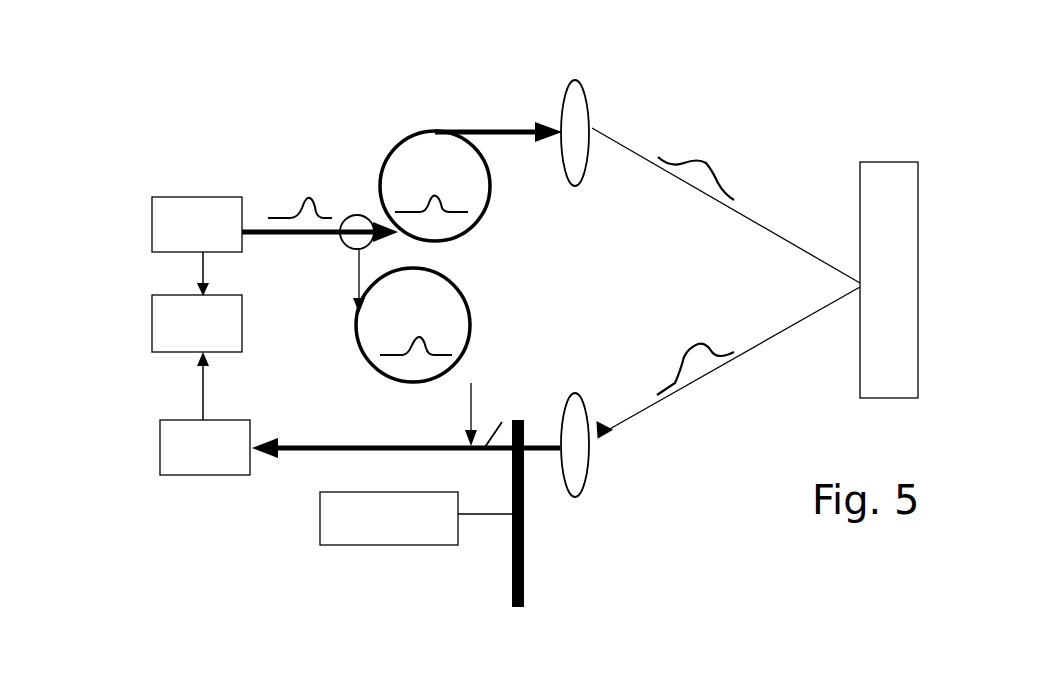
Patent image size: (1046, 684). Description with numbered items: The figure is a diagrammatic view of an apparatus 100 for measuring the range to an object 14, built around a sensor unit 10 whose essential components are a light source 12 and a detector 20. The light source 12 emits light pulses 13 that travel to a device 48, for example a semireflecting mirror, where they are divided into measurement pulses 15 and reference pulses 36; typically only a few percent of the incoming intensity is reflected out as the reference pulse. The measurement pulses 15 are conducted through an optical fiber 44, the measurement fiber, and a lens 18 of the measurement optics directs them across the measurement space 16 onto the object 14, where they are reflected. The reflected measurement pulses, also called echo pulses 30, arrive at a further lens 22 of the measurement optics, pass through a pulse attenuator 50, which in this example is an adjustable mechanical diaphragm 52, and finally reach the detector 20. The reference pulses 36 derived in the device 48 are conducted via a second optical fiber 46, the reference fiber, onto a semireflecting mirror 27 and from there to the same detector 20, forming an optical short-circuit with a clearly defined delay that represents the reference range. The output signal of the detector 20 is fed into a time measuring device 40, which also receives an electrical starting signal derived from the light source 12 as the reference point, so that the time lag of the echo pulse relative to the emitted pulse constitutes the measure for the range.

The sensor unit 10 is at (125, 162).
The apparatus 100 is at (236, 128).
The light source 12 is at (224, 240).
The light pulses 13 is at (304, 206).
The object 14 is at (912, 302).
The measurement pulses 15 is at (430, 200).
The measurement space 16 is at (858, 107).
The lens 18 is at (575, 105).
The detector 20 is at (232, 462).
The lens 22 is at (575, 465).
The semireflecting mirror 27 is at (457, 478).
The echo pulses 30 is at (690, 356).
The reference pulses 36 is at (421, 340).
The time measuring device 40 is at (224, 337).
The optical fiber 44 is at (435, 131).
The optical fiber 46 is at (462, 290).
The device 48 is at (357, 215).
The pulse attenuator 50 is at (418, 532).
The adjustable mechanical diaphragm 52 is at (525, 465).